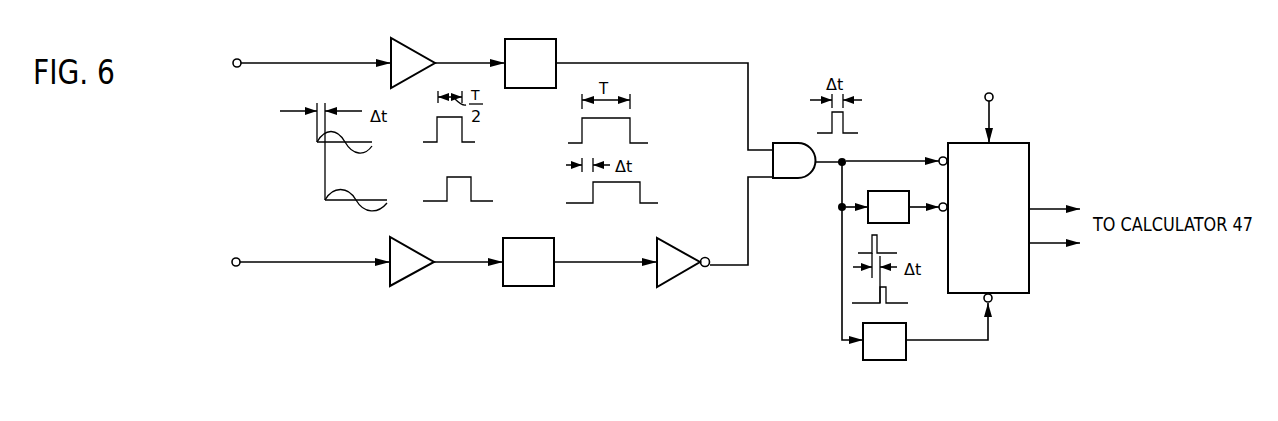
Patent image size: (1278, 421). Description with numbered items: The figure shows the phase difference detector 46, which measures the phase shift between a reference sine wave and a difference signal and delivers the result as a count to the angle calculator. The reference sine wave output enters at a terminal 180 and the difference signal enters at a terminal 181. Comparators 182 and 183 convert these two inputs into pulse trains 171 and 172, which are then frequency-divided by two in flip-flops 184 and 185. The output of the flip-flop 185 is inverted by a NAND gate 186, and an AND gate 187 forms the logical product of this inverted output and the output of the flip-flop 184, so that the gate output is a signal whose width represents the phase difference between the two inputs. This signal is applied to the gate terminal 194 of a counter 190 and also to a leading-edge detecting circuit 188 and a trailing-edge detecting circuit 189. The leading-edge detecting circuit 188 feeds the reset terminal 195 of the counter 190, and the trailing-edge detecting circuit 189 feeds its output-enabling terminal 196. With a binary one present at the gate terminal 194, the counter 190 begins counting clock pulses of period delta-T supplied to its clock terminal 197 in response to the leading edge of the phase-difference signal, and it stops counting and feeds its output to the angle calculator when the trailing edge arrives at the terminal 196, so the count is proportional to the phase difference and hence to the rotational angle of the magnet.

The phase difference detector 46 is at (1108, 134).
The pulse train 171 is at (463, 62).
The pulse train 172 is at (464, 265).
The terminal 180 is at (232, 63).
The terminal 181 is at (231, 261).
The comparator 182 is at (413, 38).
The comparator 183 is at (398, 288).
The flip-flop 184 is at (540, 39).
The flip-flop 185 is at (543, 288).
The NAND gate 186 is at (669, 288).
The AND gate 187 is at (793, 180).
The leading-edge detecting circuit 188 is at (905, 191).
The trailing-edge detecting circuit 189 is at (875, 362).
The counter 190 is at (1030, 180).
The gate terminal 194 is at (944, 156).
The reset terminal 195 is at (940, 212).
The output-enabling terminal 196 is at (995, 305).
The clock terminal 197 is at (995, 95).